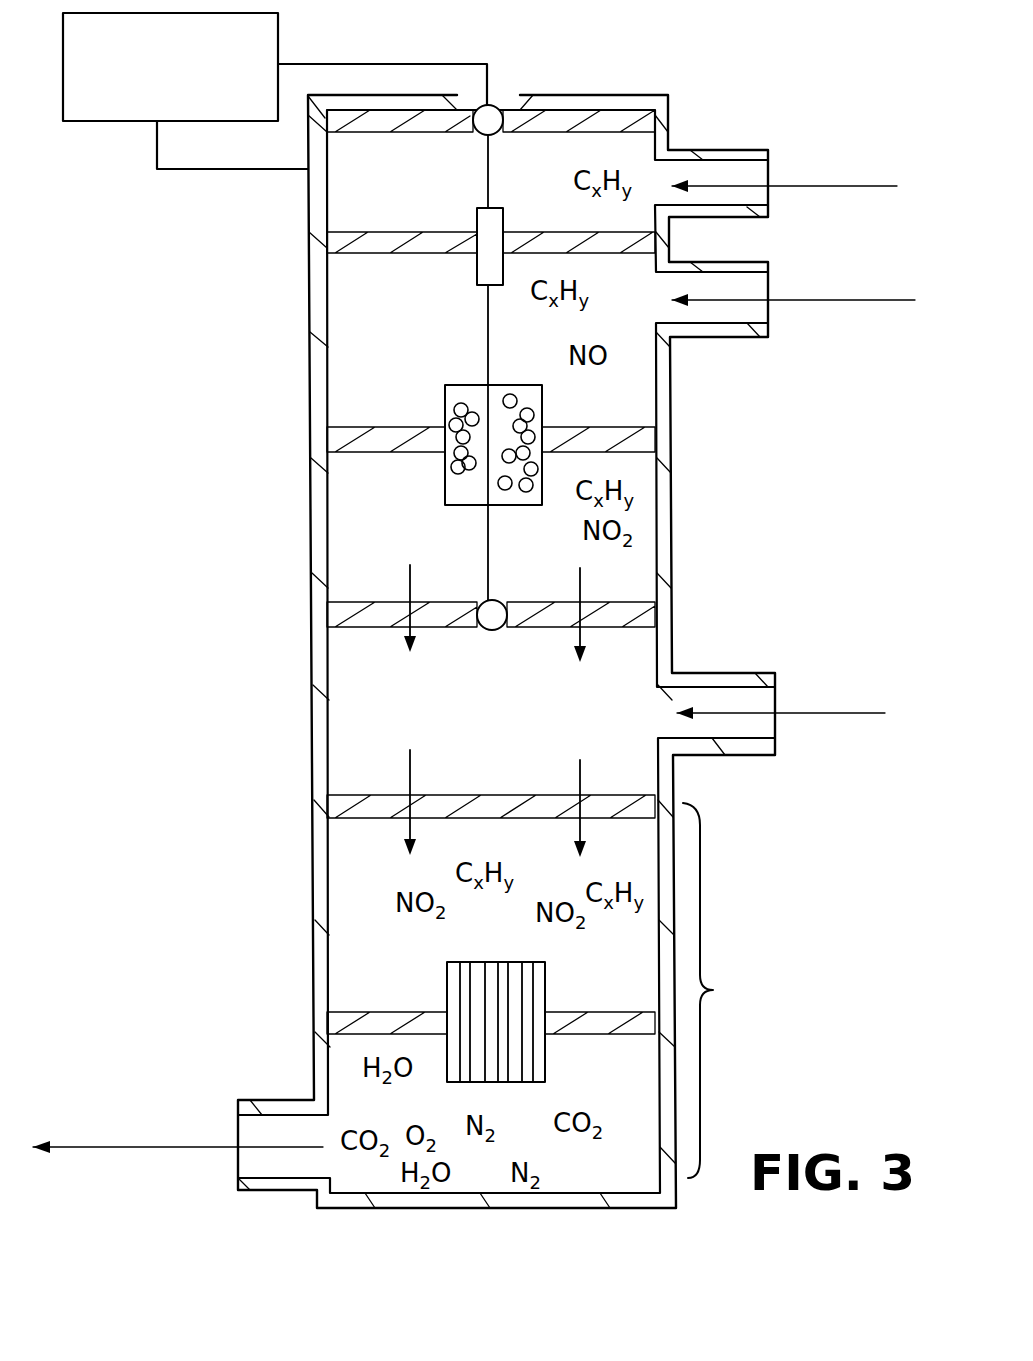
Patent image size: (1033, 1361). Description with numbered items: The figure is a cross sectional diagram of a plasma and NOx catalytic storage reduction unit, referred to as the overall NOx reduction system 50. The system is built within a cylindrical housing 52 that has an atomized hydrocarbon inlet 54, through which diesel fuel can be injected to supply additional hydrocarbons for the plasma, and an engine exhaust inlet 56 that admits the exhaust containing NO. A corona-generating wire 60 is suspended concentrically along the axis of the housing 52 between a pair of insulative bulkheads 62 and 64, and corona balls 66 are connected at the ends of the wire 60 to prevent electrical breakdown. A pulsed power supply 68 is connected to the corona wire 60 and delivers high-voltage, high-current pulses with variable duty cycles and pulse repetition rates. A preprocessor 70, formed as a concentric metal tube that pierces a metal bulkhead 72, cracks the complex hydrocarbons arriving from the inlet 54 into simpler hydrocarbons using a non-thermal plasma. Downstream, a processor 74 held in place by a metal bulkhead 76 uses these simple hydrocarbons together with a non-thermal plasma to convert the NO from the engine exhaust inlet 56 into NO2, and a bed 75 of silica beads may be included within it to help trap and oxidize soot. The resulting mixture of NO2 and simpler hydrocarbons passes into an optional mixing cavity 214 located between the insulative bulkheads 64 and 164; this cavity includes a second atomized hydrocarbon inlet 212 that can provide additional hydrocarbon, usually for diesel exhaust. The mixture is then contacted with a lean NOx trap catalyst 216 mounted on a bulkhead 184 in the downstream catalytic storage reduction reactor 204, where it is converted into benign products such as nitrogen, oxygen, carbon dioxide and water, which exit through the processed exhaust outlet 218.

The NOx reduction system 50 is at (196, 276).
The cylindrical housing 52 is at (310, 306).
The atomized hydrocarbon inlet 54 is at (738, 150).
The engine exhaust inlet 56 is at (700, 337).
The corona-generating wire 60 is at (487, 158).
The insulative bulkhead 62 is at (412, 133).
The insulative bulkhead 64 is at (545, 601).
The corona balls 66 is at (497, 133).
The pulsed power supply 68 is at (126, 121).
The preprocessor 70 is at (505, 218).
The metal bulkhead 72 is at (423, 254).
The processor 74 is at (455, 385).
The bed of silica beads 75 is at (463, 480).
The metal bulkhead 76 is at (413, 427).
The insulative bulkhead 164 is at (533, 795).
The bulkhead 184 is at (592, 1012).
The catalytic storage reduction reactor 204 is at (728, 990).
The atomized hydrocarbon inlet 212 is at (730, 673).
The mixing cavity 214 is at (418, 705).
The lean NOx trap catalyst 216 is at (447, 976).
The processed exhaust outlet 218 is at (285, 1100).